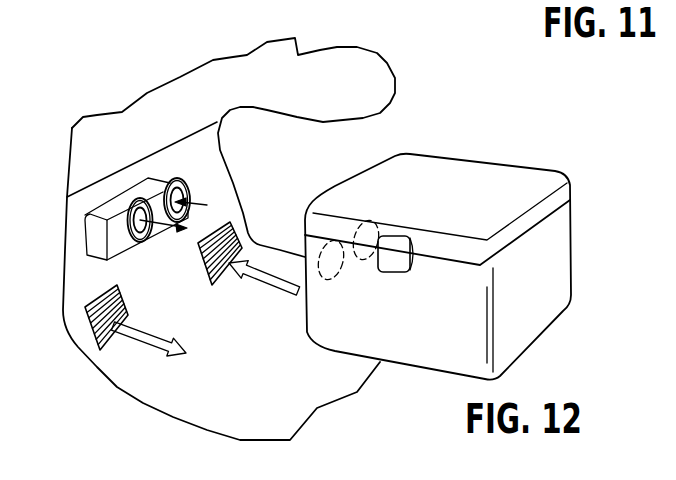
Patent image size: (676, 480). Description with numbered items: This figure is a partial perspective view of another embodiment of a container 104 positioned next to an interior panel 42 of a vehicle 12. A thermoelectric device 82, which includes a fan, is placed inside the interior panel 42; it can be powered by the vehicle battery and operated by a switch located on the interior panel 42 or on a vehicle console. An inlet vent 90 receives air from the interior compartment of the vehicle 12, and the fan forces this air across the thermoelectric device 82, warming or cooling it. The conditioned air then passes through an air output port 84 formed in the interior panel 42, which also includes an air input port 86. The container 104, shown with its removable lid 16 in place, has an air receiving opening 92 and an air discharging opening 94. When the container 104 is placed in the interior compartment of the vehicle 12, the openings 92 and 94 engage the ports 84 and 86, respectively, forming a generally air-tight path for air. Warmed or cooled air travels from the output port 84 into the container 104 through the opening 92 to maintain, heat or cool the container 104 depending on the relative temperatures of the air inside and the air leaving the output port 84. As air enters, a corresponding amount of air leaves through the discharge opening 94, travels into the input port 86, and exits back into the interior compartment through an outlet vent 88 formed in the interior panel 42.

The vehicle 12 is at (131, 65).
The removable lid 16 is at (488, 193).
The interior panel 42 is at (205, 163).
The thermoelectric device 82 is at (92, 238).
The air output port 84 is at (139, 198).
The air input port 86 is at (178, 178).
The outlet vent 88 is at (100, 337).
The inlet vent 90 is at (230, 238).
The air receiving opening 92 is at (328, 240).
The air discharging opening 94 is at (367, 222).
The container 104 is at (537, 272).